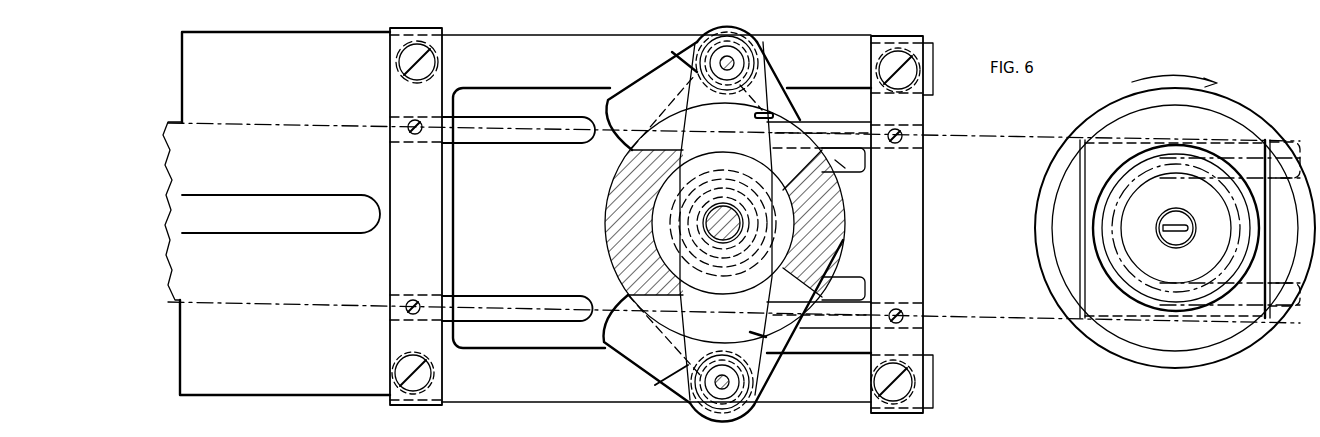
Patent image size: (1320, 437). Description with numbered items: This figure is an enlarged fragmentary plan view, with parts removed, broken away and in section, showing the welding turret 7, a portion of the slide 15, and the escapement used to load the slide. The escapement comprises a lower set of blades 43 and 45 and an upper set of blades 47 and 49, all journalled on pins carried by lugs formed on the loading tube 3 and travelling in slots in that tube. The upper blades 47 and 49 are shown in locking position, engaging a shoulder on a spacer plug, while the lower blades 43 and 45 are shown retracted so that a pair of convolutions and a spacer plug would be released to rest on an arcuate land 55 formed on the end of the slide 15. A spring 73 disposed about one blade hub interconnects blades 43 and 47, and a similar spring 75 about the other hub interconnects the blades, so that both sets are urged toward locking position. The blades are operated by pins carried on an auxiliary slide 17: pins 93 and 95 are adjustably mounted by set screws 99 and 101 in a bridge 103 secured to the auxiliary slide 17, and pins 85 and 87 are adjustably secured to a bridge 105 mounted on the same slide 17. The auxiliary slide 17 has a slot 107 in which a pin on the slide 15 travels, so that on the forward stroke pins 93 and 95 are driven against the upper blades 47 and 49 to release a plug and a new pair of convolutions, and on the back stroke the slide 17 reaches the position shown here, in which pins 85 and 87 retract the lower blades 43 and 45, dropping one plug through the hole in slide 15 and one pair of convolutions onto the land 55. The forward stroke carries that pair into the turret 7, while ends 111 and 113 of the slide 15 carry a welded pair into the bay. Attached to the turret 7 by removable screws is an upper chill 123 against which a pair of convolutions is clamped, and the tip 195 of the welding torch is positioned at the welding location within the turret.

The loading tube 3 is at (606, 210).
The turret 7 is at (1093, 358).
The slide 15 is at (173, 306).
The auxiliary slide 17 is at (266, 397).
The lower blade 43 is at (622, 358).
The lower blade 45 is at (640, 80).
The upper blade 47 is at (771, 355).
The upper blade 49 is at (776, 113).
The land 55 is at (840, 168).
The spring 73 is at (656, 385).
The spring 75 is at (670, 52).
The pin 85 is at (826, 322).
The pin 87 is at (832, 130).
The pin 93 is at (570, 296).
The pin 95 is at (536, 143).
The set screw 99 is at (416, 300).
The set screw 101 is at (417, 134).
The bridge 103 is at (388, 262).
The bridge 105 is at (925, 197).
The slot 107 is at (290, 197).
The end of slide 111 is at (866, 165).
The end of slide 113 is at (866, 288).
The upper chill 123 is at (1232, 228).
The tip 195 is at (1170, 240).